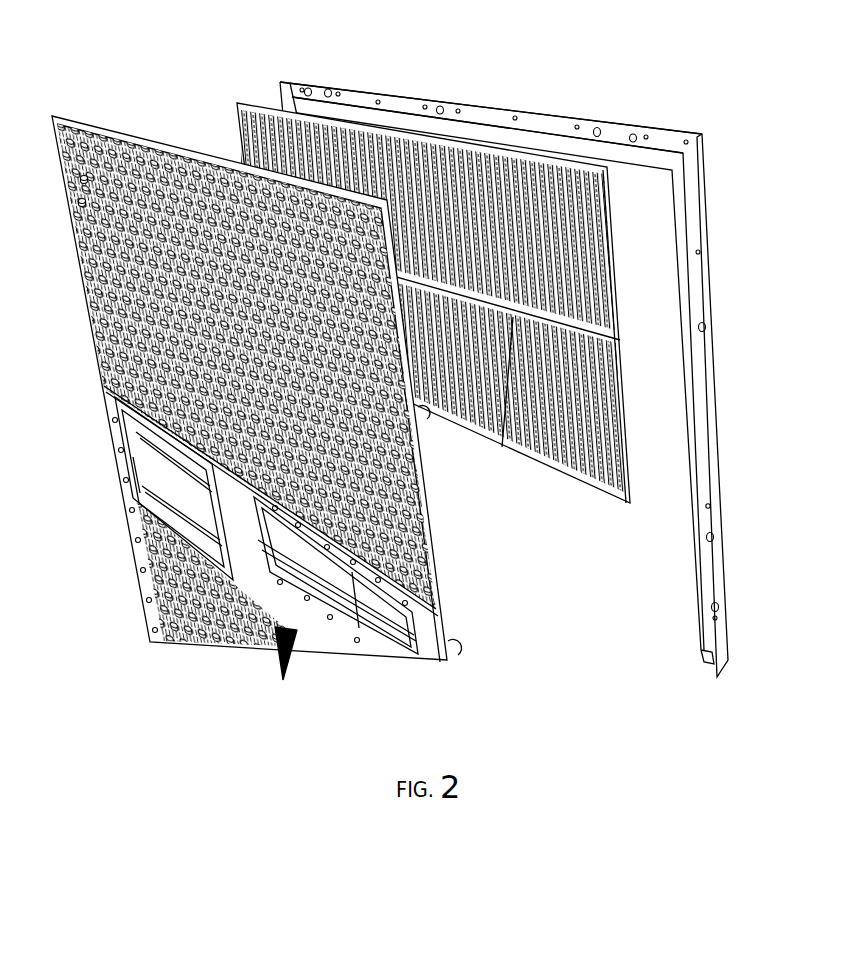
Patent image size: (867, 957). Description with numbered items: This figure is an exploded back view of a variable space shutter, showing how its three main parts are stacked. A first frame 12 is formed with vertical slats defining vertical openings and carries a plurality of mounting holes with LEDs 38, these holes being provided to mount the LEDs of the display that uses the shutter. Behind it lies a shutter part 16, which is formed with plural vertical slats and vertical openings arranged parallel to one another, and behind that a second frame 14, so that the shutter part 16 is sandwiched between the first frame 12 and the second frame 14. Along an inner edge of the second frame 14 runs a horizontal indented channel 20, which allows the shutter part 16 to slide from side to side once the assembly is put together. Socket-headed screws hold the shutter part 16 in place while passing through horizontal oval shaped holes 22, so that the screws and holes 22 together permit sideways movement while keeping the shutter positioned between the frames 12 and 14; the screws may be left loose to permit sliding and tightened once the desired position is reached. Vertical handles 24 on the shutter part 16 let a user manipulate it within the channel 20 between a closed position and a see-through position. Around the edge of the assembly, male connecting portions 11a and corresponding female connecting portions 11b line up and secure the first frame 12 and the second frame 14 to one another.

The male connecting portion 11a is at (428, 416).
The female connecting portion 11b is at (597, 123).
The first frame 12 is at (272, 390).
The second frame 14 is at (537, 121).
The shutter part 16 is at (449, 273).
The horizontal indented channel 20 is at (603, 147).
The horizontal oval shaped hole 22 is at (502, 447).
The vertical handle 24 is at (312, 150).
The mounting holes with LEDs 38 is at (80, 200).